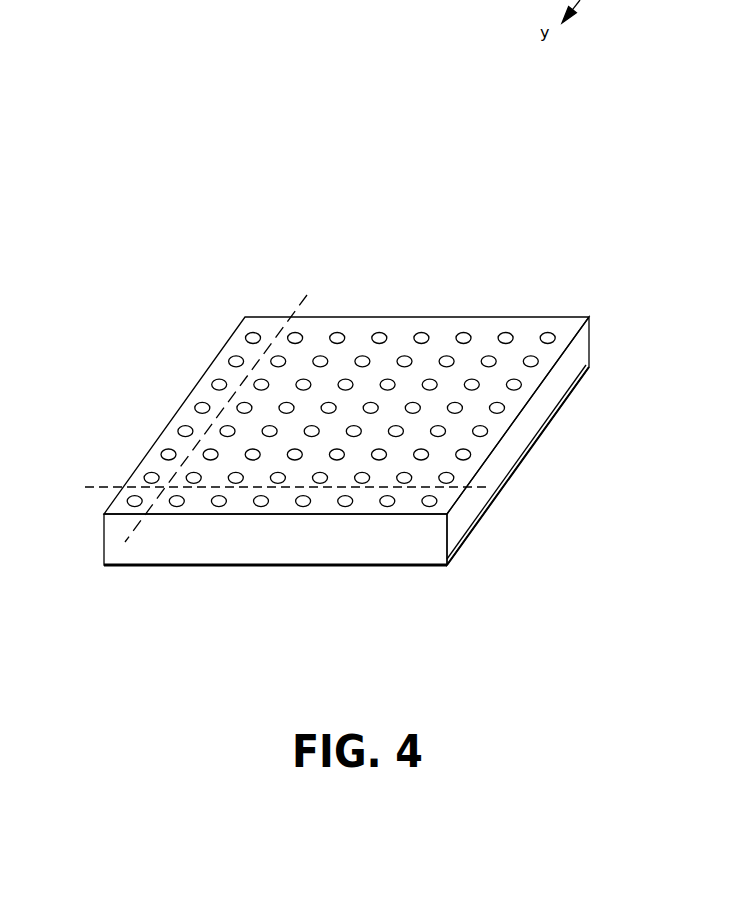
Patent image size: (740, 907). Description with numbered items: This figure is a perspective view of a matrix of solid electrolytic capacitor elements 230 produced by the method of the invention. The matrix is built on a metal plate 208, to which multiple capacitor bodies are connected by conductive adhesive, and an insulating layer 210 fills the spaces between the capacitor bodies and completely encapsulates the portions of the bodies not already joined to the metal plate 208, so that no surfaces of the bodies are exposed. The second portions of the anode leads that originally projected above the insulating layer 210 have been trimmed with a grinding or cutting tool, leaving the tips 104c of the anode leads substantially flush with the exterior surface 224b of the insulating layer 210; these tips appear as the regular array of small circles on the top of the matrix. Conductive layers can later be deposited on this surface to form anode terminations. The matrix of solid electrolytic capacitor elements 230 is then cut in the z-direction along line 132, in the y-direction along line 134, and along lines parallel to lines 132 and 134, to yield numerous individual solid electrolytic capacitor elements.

The matrix of solid electrolytic capacitor elements 230 is at (163, 260).
The exterior surface of the insulating layer 224b is at (407, 327).
The tip of the anode lead second portion 104c is at (505, 333).
The insulating layer 210 is at (122, 507).
The metal plate 208 is at (505, 482).
The cutting line in the z-direction 132 is at (268, 487).
The cutting line in the y-direction 134 is at (228, 406).